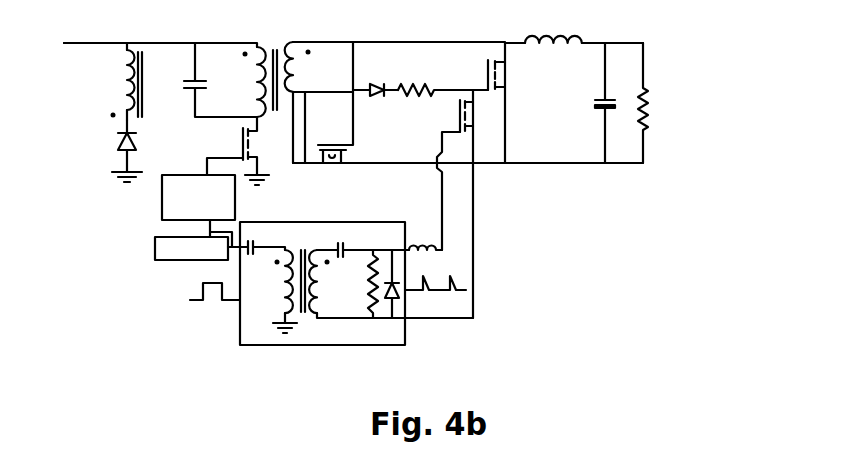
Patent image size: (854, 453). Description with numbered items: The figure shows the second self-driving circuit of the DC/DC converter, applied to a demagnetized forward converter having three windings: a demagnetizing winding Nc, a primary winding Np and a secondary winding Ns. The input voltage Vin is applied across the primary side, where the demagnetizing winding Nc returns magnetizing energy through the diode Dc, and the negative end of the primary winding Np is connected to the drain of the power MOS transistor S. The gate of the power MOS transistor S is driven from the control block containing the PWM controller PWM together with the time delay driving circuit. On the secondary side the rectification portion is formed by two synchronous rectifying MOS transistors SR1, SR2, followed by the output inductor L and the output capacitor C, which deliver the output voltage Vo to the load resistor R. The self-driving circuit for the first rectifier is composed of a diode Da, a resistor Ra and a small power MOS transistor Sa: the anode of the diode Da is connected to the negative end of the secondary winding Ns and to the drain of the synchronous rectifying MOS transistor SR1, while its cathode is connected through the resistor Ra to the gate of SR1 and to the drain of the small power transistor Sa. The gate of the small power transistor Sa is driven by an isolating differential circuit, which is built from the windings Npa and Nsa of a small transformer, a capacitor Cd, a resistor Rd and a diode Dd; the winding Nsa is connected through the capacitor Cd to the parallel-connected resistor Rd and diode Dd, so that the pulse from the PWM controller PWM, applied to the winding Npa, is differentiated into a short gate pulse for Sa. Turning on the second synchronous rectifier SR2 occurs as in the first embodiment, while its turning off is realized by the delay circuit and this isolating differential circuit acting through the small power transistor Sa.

The demagnetizing winding Nc is at (118, 81).
The demagnetizing diode Dc is at (137, 151).
The primary winding Np is at (230, 80).
The power MOS transistor S is at (241, 151).
The secondary winding Ns is at (395, 102).
The synchronous rectifying MOS transistor SR1 is at (332, 119).
The synchronous rectifying MOS transistor SR2 is at (523, 103).
The diode Da is at (375, 74).
The resistor Ra is at (443, 74).
The small power MOS transistor Sa is at (446, 204).
The output inductor L is at (574, 25).
The output capacitor C is at (595, 103).
The load resistor R is at (655, 103).
The input voltage Vin is at (128, 28).
The output voltage Vo is at (640, 28).
The PWM controller PWM is at (201, 248).
The primary winding of isolating transformer Npa is at (274, 291).
The secondary winding of isolating transformer Nsa is at (391, 284).
The differentiating capacitor Cd is at (390, 239).
The differentiating resistor Rd is at (361, 284).
The differentiating diode Dd is at (410, 284).